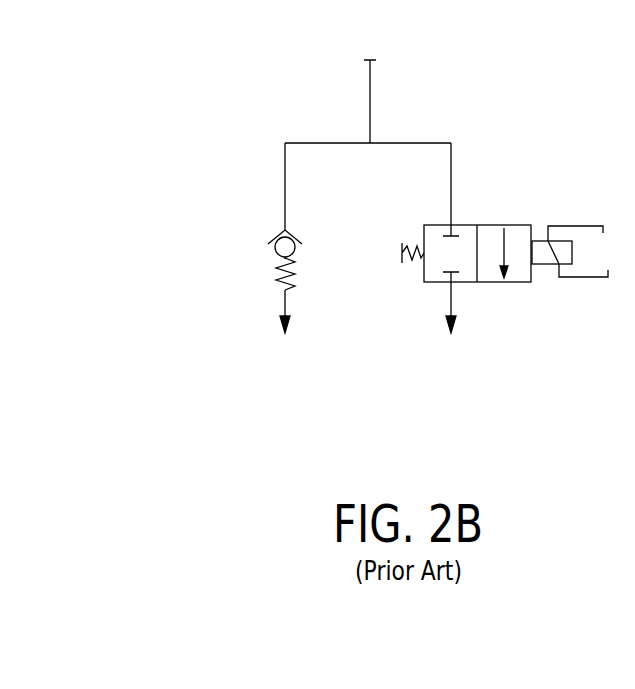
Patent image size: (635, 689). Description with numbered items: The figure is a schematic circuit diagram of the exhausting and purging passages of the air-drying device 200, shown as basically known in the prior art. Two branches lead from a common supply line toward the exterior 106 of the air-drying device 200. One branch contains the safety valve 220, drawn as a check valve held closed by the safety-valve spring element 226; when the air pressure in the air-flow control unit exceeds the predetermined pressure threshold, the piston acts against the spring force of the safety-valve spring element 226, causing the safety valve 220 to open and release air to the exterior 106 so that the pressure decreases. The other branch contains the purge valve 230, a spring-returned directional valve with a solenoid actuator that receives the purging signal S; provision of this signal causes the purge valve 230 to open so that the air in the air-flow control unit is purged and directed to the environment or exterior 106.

The air-drying device 200 is at (272, 99).
The safety valve 220 is at (243, 240).
The safety-valve spring element 226 is at (249, 277).
The exterior 106 is at (264, 341).
The purge valve 230 is at (497, 188).